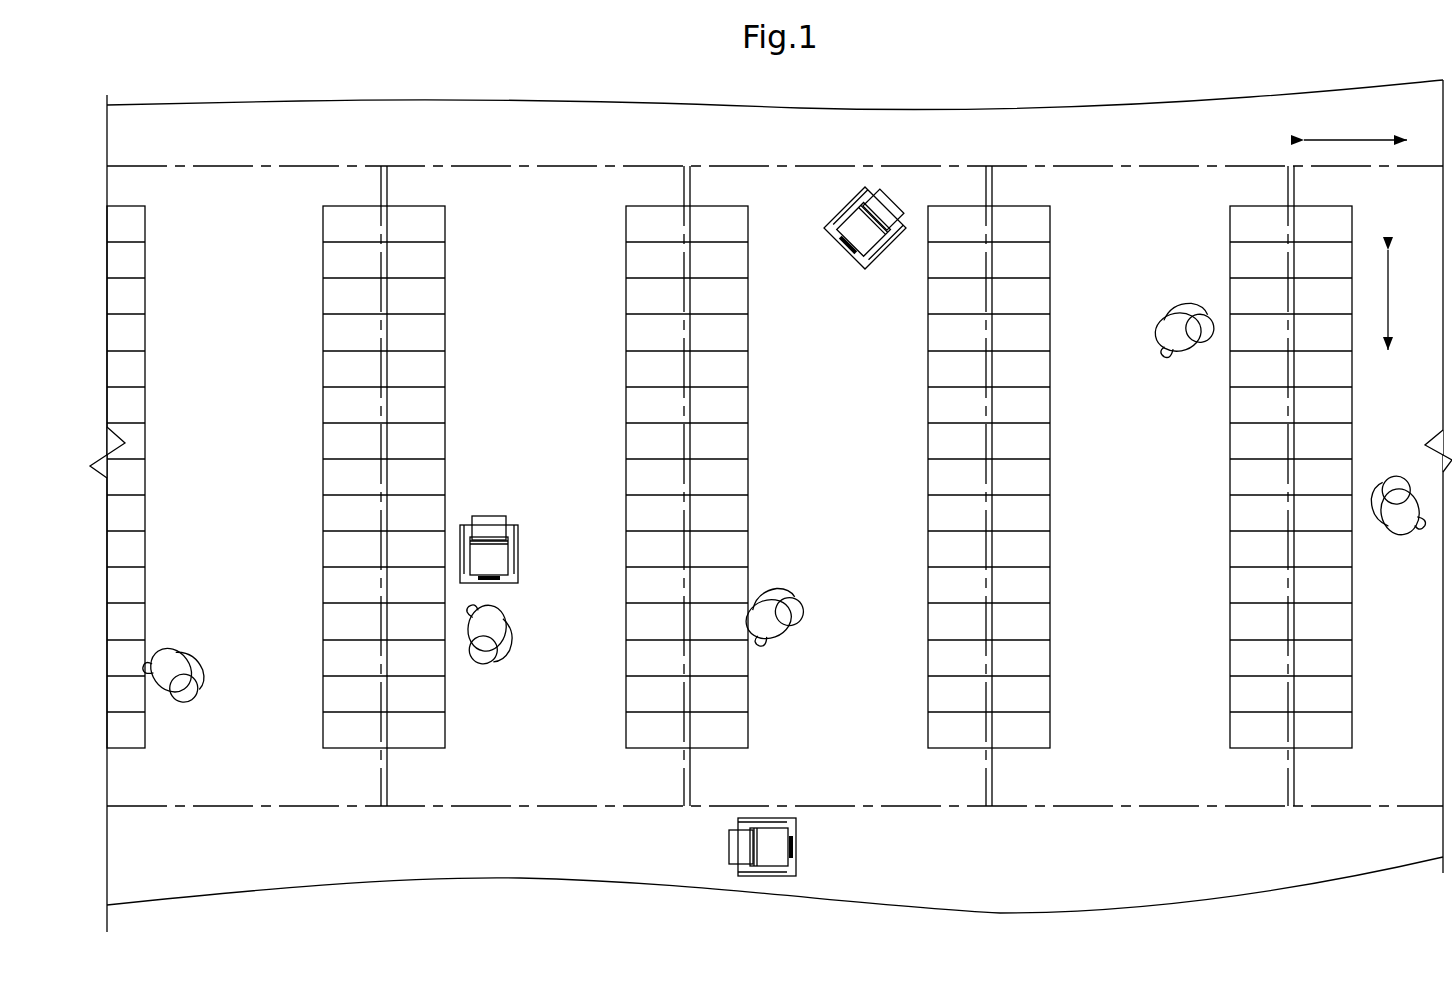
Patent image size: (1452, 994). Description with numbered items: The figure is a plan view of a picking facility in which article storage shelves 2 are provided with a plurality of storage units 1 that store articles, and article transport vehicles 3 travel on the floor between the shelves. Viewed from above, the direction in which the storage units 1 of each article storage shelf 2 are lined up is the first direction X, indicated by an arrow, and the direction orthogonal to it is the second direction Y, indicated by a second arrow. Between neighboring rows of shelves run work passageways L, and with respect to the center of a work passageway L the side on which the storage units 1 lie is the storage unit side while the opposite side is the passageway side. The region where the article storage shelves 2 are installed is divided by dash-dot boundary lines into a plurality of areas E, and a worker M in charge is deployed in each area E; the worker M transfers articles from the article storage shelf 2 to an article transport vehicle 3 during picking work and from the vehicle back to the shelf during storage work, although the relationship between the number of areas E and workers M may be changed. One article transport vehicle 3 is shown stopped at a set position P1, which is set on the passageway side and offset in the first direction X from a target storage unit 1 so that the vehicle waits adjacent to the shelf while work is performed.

The storage unit 1 is at (428, 298).
The article storage shelf 2 is at (163, 455).
The article transport vehicle 3 is at (880, 255).
The worker M is at (183, 652).
The work passageway L is at (243, 268).
The area E is at (207, 806).
The set position P1 is at (520, 508).
The first direction X is at (1400, 300).
The second direction Y is at (1355, 126).